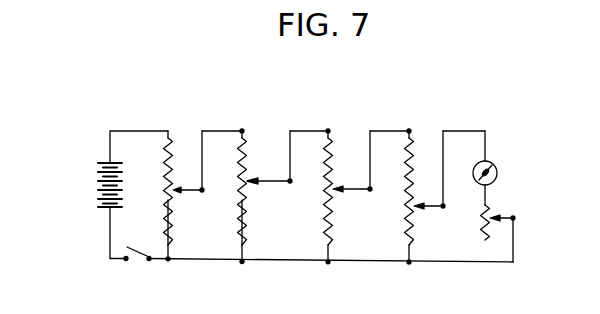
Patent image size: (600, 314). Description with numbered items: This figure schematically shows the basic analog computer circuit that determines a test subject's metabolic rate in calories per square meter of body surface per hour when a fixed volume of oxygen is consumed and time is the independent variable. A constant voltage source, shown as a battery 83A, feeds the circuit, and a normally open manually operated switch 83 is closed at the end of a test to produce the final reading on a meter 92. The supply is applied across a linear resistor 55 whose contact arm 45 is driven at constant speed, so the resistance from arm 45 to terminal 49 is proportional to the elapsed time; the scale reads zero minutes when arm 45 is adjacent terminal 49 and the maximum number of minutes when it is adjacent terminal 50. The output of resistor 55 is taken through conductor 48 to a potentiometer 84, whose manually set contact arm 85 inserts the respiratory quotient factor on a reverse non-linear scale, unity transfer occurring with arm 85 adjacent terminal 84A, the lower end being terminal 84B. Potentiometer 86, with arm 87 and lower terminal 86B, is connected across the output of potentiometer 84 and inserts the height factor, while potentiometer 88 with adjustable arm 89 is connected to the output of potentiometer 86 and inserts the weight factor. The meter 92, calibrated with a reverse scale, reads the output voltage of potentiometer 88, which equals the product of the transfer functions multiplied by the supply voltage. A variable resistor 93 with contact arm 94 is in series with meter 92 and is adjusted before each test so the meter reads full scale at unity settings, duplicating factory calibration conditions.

The contact arm 45 is at (190, 190).
The conductor 48 is at (215, 171).
The terminal 49 is at (168, 259).
The terminal 50 is at (168, 131).
The resistor 55 is at (172, 233).
The manually operated switch 83 is at (132, 262).
The battery 83A is at (96, 177).
The potentiometer 84 is at (246, 232).
The terminal 84A is at (242, 131).
The lead 84B is at (243, 262).
The contact arm 85 is at (268, 181).
The potentiometer 86 is at (332, 232).
The lead 86B is at (328, 262).
The contact arm 87 is at (352, 189).
The potentiometer 88 is at (413, 232).
The adjustable arm 89 is at (428, 206).
The meter 92 is at (493, 163).
The variable resistor 93 is at (488, 207).
The contact arm 94 is at (500, 216).